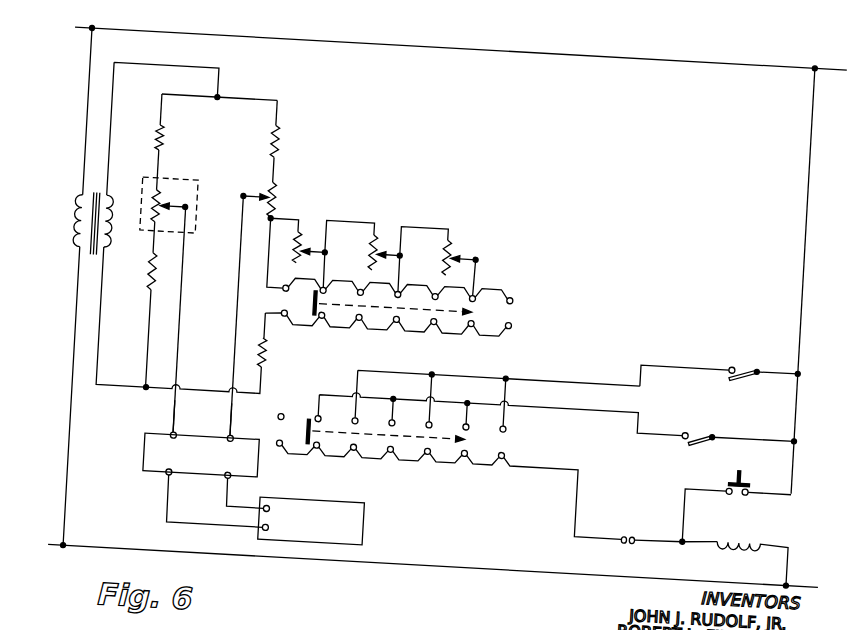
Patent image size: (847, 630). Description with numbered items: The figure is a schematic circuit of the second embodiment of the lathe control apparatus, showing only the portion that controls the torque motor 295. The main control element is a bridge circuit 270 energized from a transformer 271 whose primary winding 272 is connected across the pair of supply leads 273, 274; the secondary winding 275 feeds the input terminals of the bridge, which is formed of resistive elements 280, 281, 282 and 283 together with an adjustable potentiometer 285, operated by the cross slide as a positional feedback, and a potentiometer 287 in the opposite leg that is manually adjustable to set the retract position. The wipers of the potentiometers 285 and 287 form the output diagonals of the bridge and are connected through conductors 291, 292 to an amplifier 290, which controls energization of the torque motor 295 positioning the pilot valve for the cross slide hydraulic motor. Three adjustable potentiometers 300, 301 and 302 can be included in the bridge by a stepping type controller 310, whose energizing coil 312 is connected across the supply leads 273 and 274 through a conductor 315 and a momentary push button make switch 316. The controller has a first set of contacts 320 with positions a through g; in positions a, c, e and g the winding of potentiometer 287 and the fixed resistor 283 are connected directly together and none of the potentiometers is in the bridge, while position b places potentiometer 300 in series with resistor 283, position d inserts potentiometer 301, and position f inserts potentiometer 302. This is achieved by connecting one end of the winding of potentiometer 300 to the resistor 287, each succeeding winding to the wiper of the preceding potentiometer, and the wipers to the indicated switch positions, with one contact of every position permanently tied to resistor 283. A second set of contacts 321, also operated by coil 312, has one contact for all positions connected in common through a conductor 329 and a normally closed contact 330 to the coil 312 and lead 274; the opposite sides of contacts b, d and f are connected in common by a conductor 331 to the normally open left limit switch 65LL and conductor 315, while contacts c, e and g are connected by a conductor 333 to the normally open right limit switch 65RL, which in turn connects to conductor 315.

The supply lead 273 is at (165, 28).
The supply lead 274 is at (144, 544).
The conductor 315 is at (816, 185).
The transformer 271 is at (114, 222).
The primary winding 272 is at (92, 250).
The secondary winding 275 is at (119, 242).
The bridge circuit 270 is at (214, 251).
The resistive element 280 is at (168, 126).
The resistive element 281 is at (286, 130).
The resistive element 282 is at (167, 280).
The fixed resistor 283 is at (288, 340).
The adjustable potentiometer 285 is at (206, 227).
The potentiometer 287 is at (260, 172).
The stepping type controller 310 is at (406, 249).
The adjustable potentiometer 300 is at (330, 210).
The adjustable potentiometer 301 is at (405, 210).
The adjustable potentiometer 302 is at (480, 208).
The first set of contacts 320 is at (333, 318).
The second set of contacts 321 is at (329, 380).
The conductor 333 is at (492, 356).
The conductor 331 is at (560, 365).
The right limit switch 65RL is at (754, 336).
The left limit switch 65LL is at (726, 403).
The push button type make switch 316 is at (755, 441).
The conductor 329 is at (599, 473).
The normally closed contact 330 is at (647, 552).
The energizing coil 312 is at (781, 503).
The amplifier 290 is at (185, 466).
The conductor 291 is at (148, 414).
The conductor 292 is at (255, 410).
The torque motor 295 is at (391, 506).